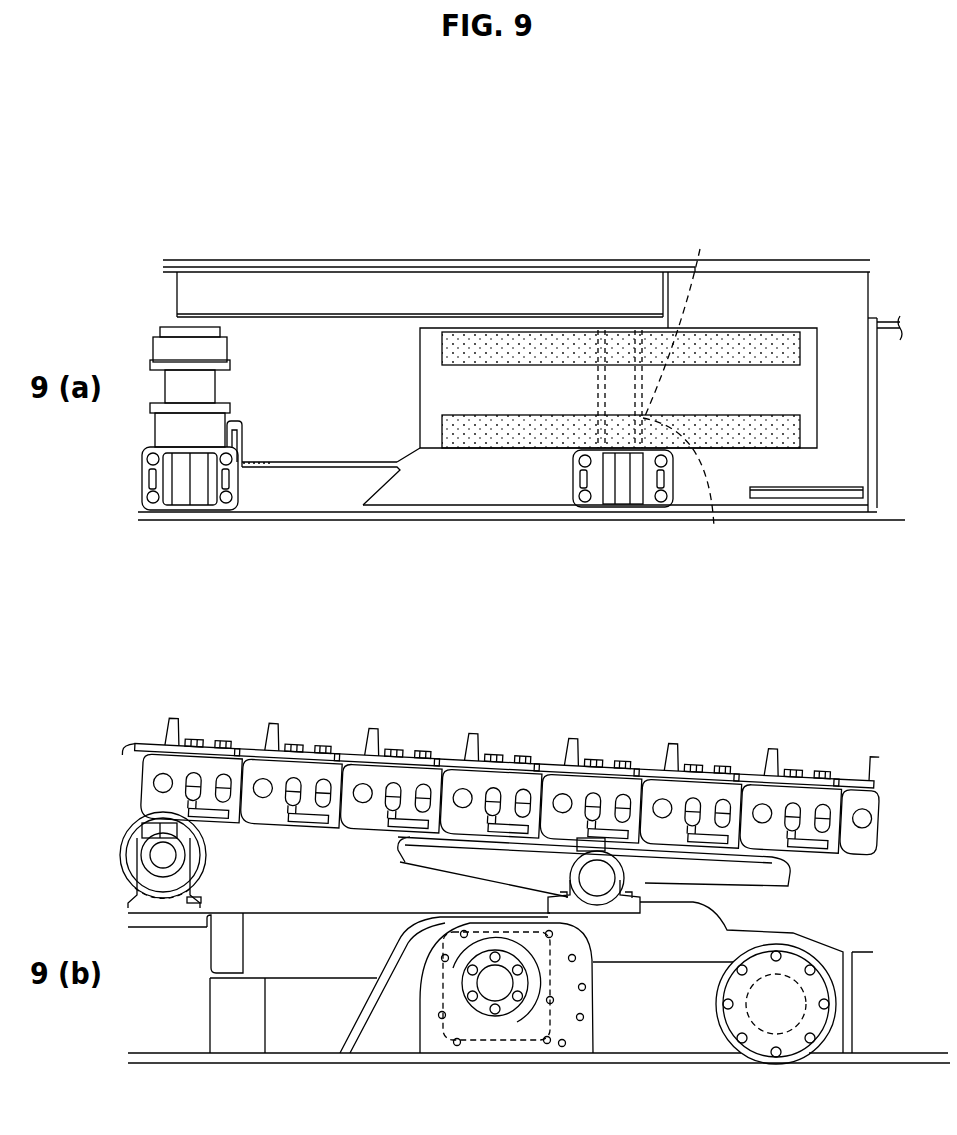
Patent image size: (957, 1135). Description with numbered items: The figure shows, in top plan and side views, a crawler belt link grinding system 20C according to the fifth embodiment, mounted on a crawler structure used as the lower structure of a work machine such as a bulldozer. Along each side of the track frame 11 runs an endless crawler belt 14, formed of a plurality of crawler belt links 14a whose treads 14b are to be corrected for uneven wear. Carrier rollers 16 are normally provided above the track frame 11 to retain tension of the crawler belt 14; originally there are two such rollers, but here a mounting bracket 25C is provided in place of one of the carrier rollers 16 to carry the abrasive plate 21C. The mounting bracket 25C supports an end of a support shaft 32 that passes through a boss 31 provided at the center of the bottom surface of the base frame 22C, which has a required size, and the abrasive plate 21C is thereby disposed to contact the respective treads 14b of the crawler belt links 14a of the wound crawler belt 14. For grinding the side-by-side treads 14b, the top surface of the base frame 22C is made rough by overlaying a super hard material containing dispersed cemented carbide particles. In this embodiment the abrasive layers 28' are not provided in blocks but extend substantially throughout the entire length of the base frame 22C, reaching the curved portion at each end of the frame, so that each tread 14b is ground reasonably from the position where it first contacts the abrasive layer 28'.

The track frame 11 is at (325, 350).
The crawler belt 14 is at (373, 748).
The crawler belt link 14a is at (308, 768).
The tread 14b is at (327, 825).
The carrier roller 16 is at (203, 345).
The crawler belt link grinding system 20C is at (630, 326).
The abrasive plate 21C is at (736, 338).
The base frame 22C is at (458, 395).
The mounting bracket 25C is at (628, 492).
The abrasive layer 28' is at (583, 522).
The boss 31 is at (687, 490).
The support shaft 32 is at (597, 1073).